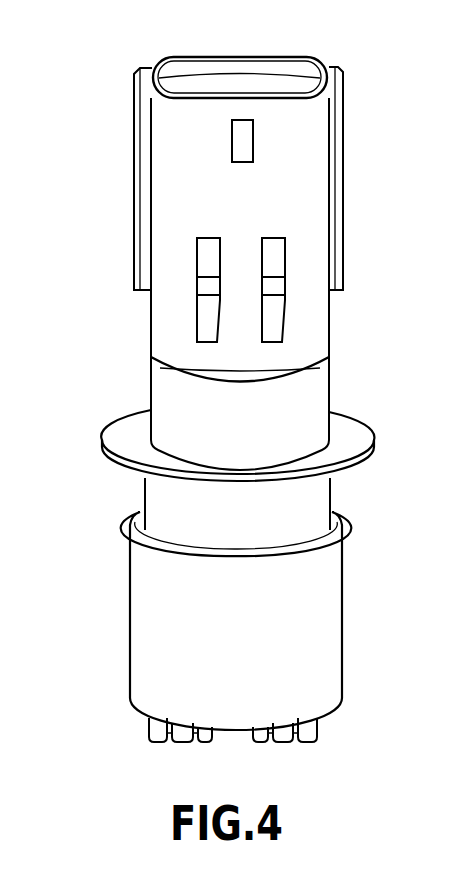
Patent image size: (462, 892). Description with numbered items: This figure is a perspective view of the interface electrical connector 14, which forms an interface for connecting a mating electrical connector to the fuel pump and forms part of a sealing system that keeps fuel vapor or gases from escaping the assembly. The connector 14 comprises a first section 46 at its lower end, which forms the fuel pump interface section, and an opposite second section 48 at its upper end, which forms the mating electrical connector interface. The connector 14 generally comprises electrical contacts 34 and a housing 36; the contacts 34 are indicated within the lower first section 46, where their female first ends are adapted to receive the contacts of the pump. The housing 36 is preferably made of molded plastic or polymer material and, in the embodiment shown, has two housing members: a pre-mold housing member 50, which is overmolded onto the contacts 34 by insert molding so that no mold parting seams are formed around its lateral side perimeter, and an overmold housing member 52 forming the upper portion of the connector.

The interface electrical connector 14 is at (362, 300).
The electrical contacts 34 is at (165, 617).
The housing 36 is at (165, 329).
The first section 46 is at (160, 656).
The second section 48 is at (140, 146).
The pre-mold housing member 50 is at (317, 502).
The overmold housing member 52 is at (337, 98).